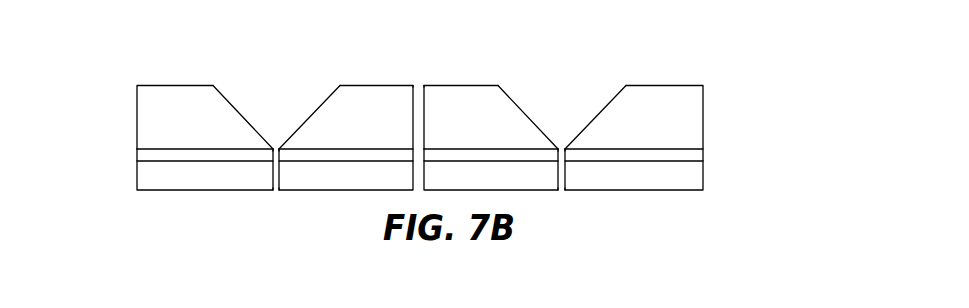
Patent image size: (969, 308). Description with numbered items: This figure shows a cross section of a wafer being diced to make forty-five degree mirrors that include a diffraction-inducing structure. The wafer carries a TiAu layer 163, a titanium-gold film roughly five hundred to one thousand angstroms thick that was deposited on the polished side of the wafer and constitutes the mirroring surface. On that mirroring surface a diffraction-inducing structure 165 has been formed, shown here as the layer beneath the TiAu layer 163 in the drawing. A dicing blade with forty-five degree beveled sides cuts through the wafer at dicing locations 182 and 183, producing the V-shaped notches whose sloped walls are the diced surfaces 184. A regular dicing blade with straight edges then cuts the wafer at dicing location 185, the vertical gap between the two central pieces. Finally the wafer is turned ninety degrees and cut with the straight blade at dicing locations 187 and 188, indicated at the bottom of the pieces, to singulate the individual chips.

The TiAu layer 163 is at (703, 152).
The diffraction-inducing structure 165 is at (703, 175).
The dicing location 182 is at (568, 99).
The dicing location 183 is at (277, 84).
The diced surfaces 184 is at (305, 122).
The dicing location 185 is at (422, 82).
The dicing location 187 is at (563, 198).
The dicing location 188 is at (277, 200).